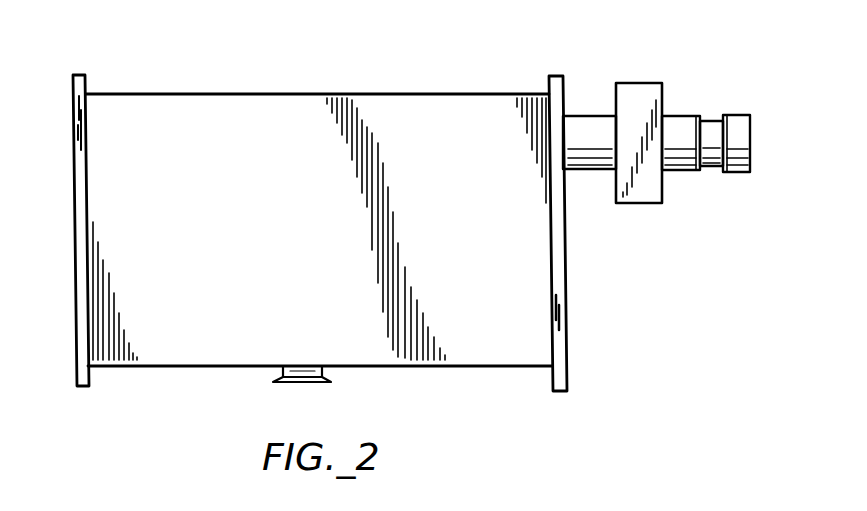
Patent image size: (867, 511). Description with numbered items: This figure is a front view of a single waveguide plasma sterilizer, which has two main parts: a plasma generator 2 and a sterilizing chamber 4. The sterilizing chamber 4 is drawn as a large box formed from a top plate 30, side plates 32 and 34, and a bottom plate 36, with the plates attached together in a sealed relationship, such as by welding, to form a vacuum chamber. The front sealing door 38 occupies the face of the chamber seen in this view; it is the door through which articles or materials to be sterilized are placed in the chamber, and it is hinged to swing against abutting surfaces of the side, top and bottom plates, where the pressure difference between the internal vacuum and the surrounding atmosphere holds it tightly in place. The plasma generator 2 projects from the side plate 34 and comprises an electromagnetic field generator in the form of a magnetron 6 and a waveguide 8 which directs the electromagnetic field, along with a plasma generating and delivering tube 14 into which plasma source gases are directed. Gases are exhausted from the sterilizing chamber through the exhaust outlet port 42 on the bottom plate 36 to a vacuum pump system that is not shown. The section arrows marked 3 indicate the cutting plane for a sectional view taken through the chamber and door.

The plasma generator 2 is at (714, 193).
The section line 3- 3 is at (426, 183).
The sterilizing chamber 4 is at (373, 67).
The magnetron 6 is at (676, 116).
The waveguide 8 is at (633, 83).
The plasma generating and delivering tube 14 is at (737, 115).
The top plate 30 is at (172, 93).
The side plate 32 is at (75, 350).
The side plate 34 is at (566, 287).
The bottom plate 36 is at (203, 368).
The front sealing door 38 is at (252, 110).
The exhaust outlet port 42 is at (300, 380).